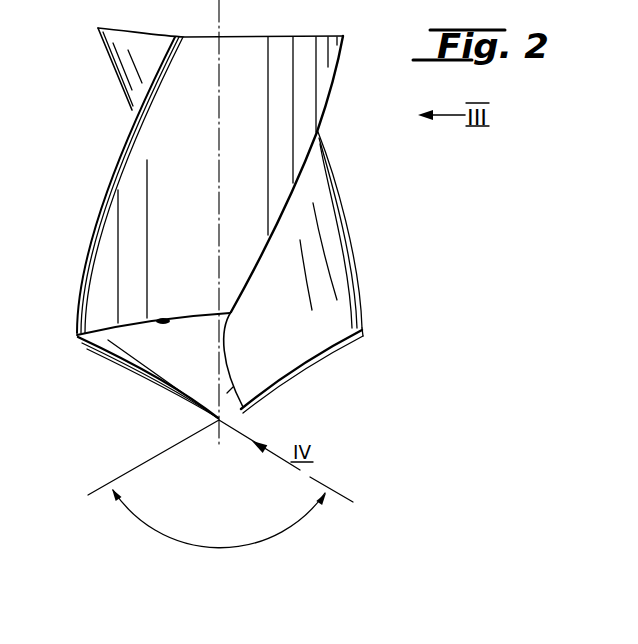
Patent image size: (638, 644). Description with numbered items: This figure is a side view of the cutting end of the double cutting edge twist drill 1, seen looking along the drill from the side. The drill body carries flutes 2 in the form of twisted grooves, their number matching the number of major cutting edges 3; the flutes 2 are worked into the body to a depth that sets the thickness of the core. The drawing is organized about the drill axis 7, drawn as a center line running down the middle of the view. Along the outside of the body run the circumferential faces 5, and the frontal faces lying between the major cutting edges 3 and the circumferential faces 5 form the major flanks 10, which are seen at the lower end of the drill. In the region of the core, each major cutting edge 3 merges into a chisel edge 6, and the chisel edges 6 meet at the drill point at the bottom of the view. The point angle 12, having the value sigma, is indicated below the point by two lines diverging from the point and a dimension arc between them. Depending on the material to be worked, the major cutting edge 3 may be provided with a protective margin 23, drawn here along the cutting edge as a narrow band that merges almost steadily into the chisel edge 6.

The double cutting edge twist drill 1 is at (337, 147).
The flutes 2 is at (312, 217).
The major cutting edges 3 is at (317, 364).
The circumferential faces 5 is at (138, 168).
The chisel edges 6 is at (236, 412).
The drill axis 7 is at (220, 223).
The major flanks 10 is at (156, 345).
The point angle 12 is at (218, 547).
The protective margin 23 is at (345, 343).